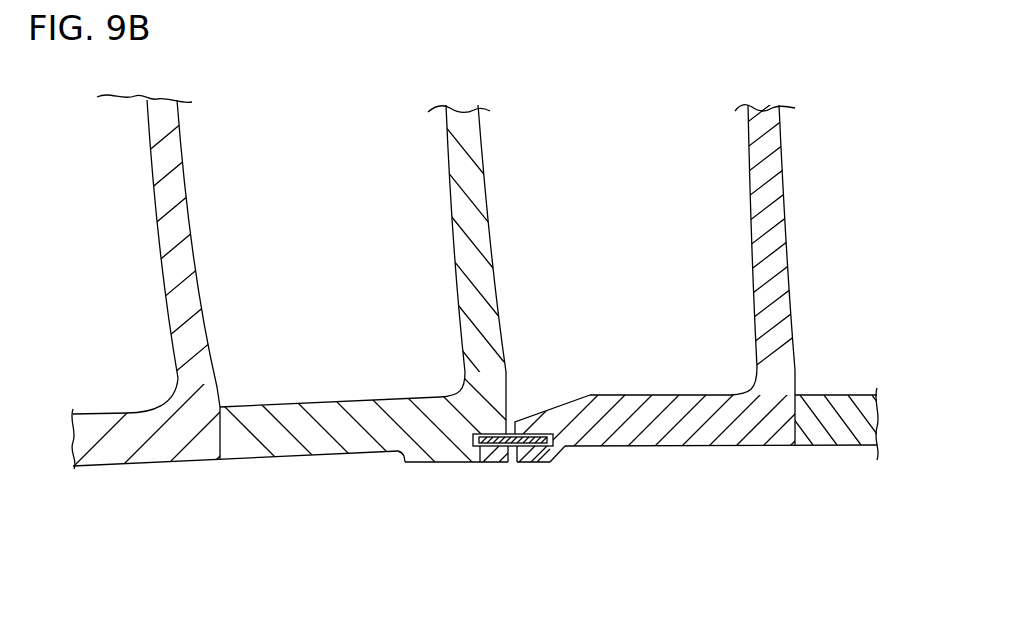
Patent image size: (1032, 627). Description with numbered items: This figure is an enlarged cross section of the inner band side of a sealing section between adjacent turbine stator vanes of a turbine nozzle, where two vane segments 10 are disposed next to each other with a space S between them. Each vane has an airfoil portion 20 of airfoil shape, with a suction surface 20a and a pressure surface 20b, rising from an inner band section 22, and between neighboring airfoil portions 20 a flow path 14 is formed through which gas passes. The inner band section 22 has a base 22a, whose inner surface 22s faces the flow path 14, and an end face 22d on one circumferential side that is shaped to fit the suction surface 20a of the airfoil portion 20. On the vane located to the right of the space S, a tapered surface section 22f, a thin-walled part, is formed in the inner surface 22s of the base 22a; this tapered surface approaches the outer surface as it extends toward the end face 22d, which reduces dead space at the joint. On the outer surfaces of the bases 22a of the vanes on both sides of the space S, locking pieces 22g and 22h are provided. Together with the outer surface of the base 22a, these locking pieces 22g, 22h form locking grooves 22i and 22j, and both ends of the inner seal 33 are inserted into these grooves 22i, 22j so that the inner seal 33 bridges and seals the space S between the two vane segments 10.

The vane segment 10 is at (270, 512).
The flow path 14 is at (334, 266).
The airfoil portion 20 is at (149, 195).
The suction surface 20a is at (170, 333).
The pressure surface 20b is at (182, 184).
The inner band section 22 is at (322, 405).
The base 22a is at (107, 452).
The end face 22d is at (513, 463).
The tapered surface section 22f is at (553, 413).
The locking piece 22g is at (410, 460).
The locking piece 22h is at (548, 455).
The locking groove 22i is at (490, 448).
The locking groove 22j is at (535, 452).
The inner surface 22s is at (270, 405).
The inner seal 33 is at (483, 437).
The space S is at (516, 400).